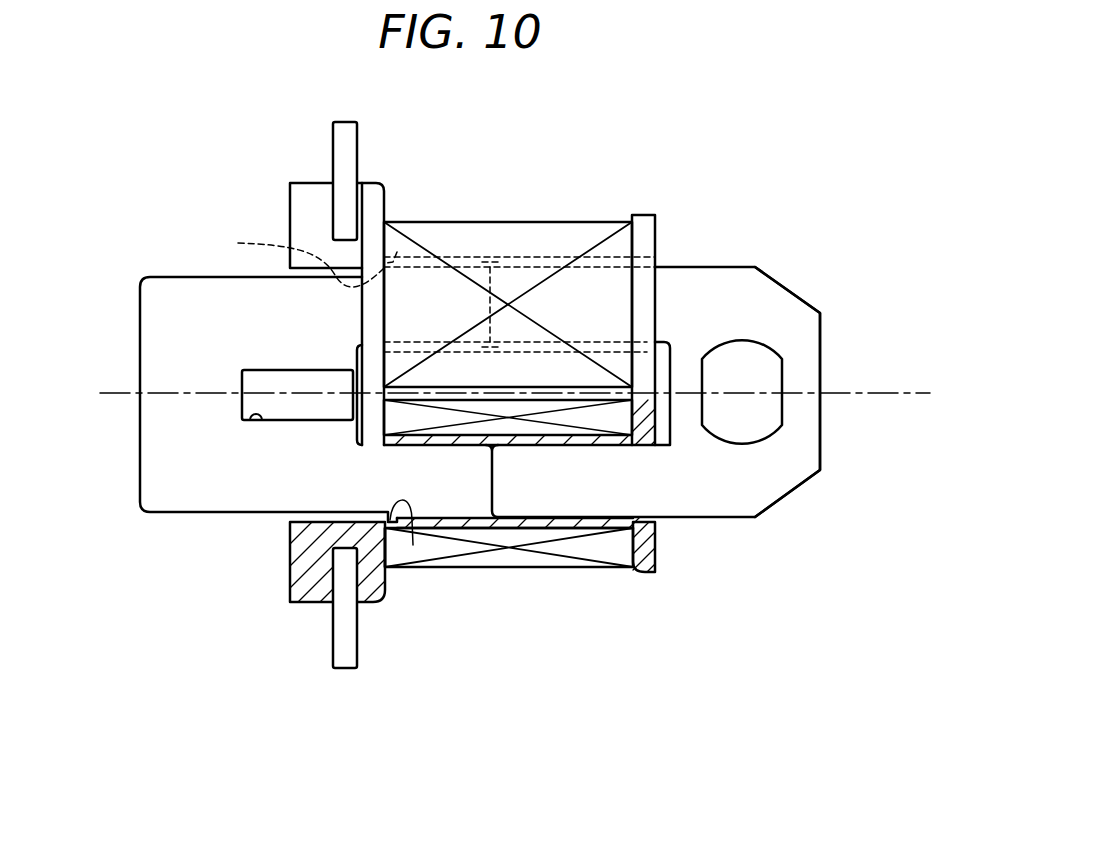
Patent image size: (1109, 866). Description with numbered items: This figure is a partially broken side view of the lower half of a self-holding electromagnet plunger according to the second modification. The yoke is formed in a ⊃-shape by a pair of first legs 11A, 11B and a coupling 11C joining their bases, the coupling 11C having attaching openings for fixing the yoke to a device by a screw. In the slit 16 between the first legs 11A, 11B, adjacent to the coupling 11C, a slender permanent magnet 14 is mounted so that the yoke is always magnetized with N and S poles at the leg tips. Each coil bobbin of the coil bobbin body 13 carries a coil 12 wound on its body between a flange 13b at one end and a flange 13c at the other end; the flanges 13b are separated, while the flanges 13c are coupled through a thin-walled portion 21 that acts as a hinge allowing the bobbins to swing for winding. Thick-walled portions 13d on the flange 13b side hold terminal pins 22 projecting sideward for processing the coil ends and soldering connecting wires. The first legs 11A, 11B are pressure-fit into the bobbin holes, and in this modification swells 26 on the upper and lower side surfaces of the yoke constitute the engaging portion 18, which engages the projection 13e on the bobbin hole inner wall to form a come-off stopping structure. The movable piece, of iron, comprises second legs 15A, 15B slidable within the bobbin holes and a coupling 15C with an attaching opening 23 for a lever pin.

The first leg 11A is at (458, 297).
The first leg 11B is at (470, 503).
The coupling 11C is at (167, 432).
The coil 12 is at (545, 230).
The coil bobbin body 13 is at (650, 543).
The flange 13b is at (372, 195).
The flange 13c is at (645, 218).
The thick-walled portion 13d is at (300, 198).
The projection 13e is at (428, 600).
The permanent magnet 14 is at (262, 375).
The second leg 15A is at (572, 290).
The second leg 15B is at (607, 500).
The coupling 15C is at (802, 420).
The slit 16 is at (253, 415).
The engaging portion 18 is at (397, 252).
The thin-walled portion 21 is at (643, 402).
The terminal pin 22 is at (340, 140).
The attaching opening 23 is at (748, 355).
The swell 26 is at (433, 260).